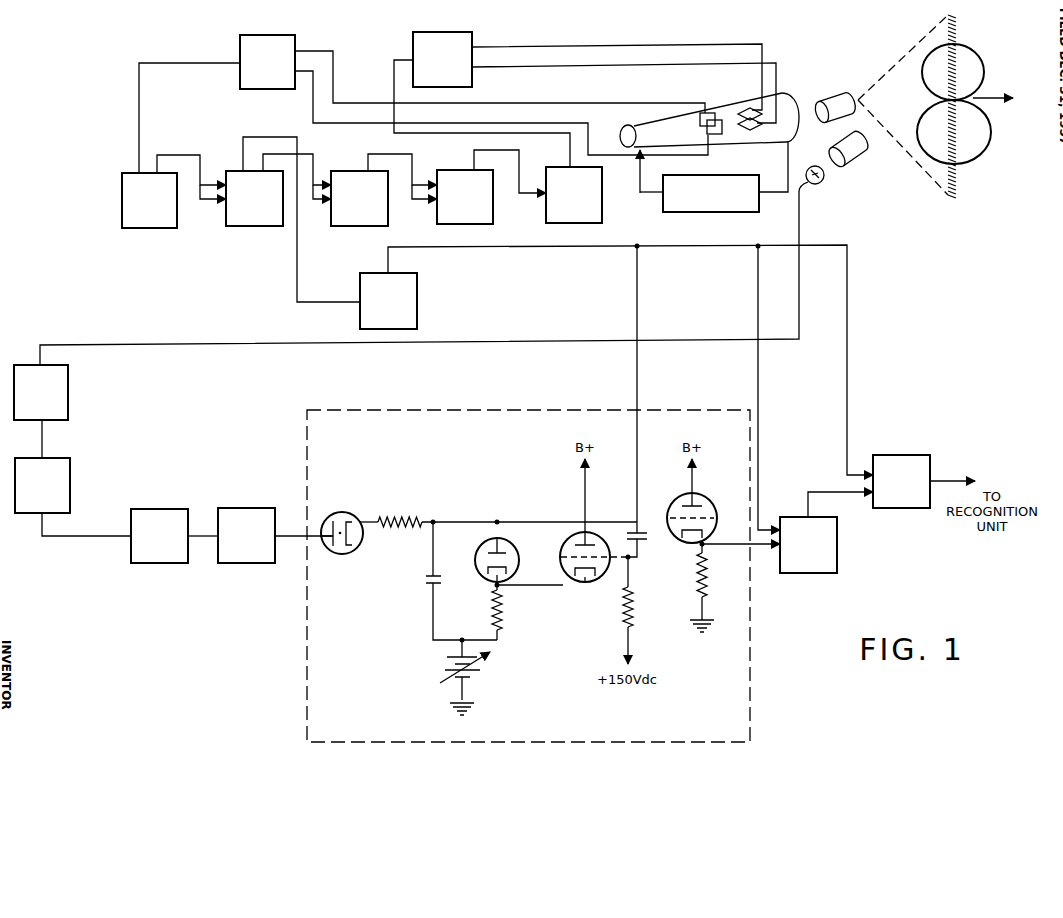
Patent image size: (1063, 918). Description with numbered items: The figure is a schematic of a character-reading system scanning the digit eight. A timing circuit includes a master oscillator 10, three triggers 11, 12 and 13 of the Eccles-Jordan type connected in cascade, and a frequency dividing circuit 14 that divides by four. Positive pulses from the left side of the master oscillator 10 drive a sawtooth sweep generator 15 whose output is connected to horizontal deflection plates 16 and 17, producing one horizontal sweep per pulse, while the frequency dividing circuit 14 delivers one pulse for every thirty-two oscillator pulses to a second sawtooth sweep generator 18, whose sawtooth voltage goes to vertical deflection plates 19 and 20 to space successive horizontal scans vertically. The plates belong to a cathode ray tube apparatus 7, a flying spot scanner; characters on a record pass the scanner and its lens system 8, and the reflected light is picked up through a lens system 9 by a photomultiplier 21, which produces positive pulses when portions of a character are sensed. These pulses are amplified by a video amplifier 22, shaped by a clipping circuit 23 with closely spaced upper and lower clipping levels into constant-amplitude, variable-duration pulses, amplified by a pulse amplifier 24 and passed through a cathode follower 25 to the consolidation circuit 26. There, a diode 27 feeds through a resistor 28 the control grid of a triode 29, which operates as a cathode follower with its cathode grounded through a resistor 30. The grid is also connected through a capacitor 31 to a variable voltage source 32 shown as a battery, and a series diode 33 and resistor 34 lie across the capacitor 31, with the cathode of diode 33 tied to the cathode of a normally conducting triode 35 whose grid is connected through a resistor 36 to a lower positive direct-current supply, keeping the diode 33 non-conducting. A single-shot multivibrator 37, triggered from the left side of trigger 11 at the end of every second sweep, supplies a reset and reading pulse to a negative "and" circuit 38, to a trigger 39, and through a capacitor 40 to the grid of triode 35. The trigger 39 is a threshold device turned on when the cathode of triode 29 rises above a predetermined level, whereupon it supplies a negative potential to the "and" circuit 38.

The cathode ray tube apparatus 7 is at (783, 93).
The lens system 8 is at (840, 100).
The lens system 9 is at (859, 162).
The master oscillator 10 is at (150, 228).
The trigger 11 is at (253, 226).
The trigger 12 is at (357, 226).
The trigger 13 is at (465, 224).
The frequency dividing circuit 14 is at (580, 223).
The sawtooth sweep generator 15 is at (276, 35).
The horizontal deflection plate 16 is at (705, 112).
The horizontal deflection plate 17 is at (713, 135).
The sawtooth sweep generator 18 is at (448, 32).
The vertical deflection plate 19 is at (750, 108).
The vertical deflection plate 20 is at (750, 130).
The photomultiplier 21 is at (816, 185).
The video amplifier 22 is at (68, 398).
The clipping circuit 23 is at (70, 493).
The pulse amplifier 24 is at (161, 509).
The cathode follower 25 is at (249, 508).
The consolidation circuit 26 is at (499, 410).
The diode 27 is at (351, 513).
The resistor 28 is at (396, 527).
The triode 29 is at (700, 497).
The resistor 30 is at (713, 575).
The capacitor 31 is at (426, 582).
The variable voltage source 32 is at (476, 672).
The diode 33 is at (479, 552).
The resistor 34 is at (506, 610).
The triode 35 is at (564, 552).
The resistor 36 is at (639, 607).
The single-shot multivibrator 37 is at (417, 306).
The negative "and" circuit 38 is at (906, 455).
The trigger 39 is at (837, 548).
The capacitor 40 is at (648, 536).